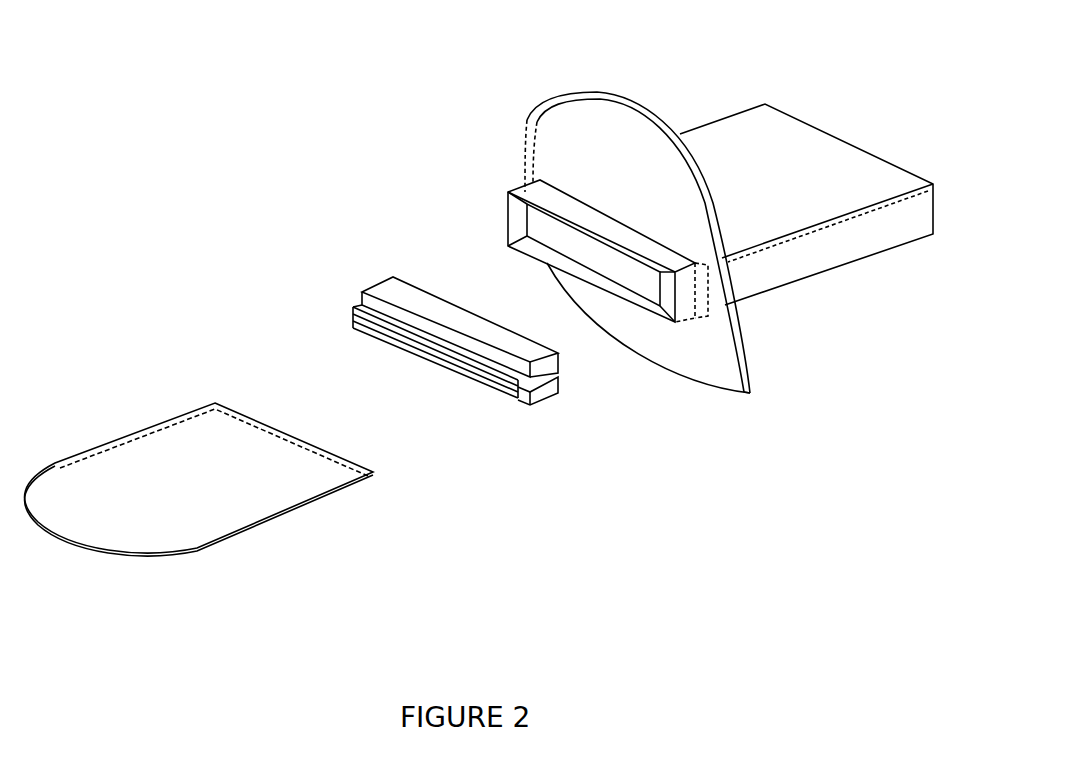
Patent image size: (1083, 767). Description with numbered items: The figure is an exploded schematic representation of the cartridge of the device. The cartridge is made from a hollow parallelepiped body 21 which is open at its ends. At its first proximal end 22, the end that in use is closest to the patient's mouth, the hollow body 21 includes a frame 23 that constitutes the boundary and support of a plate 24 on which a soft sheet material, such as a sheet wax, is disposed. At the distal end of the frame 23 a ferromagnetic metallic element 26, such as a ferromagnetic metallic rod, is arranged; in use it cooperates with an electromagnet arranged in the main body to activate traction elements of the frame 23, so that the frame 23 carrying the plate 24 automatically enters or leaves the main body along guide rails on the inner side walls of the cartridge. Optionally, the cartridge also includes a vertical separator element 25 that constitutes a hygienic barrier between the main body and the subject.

The hollow parallelepiped body 21 is at (770, 195).
The first proximal end 22 is at (515, 215).
The frame 23 is at (403, 300).
The plate 24 is at (288, 523).
The vertical separator element 25 is at (625, 152).
The ferromagnetic metallic element 26 is at (560, 374).